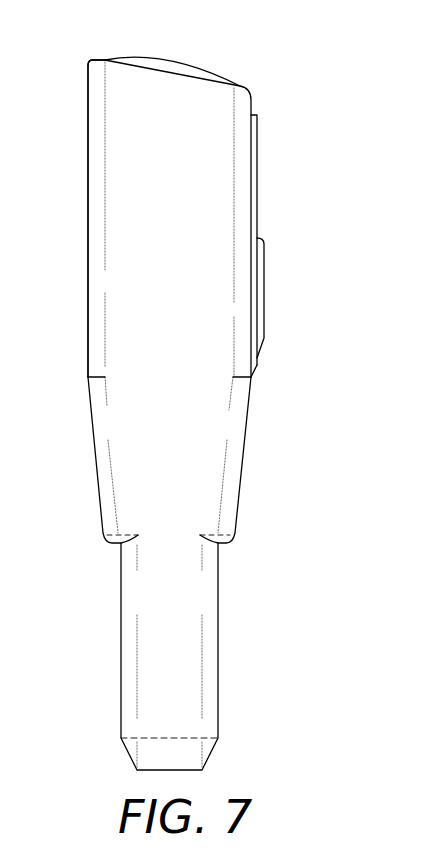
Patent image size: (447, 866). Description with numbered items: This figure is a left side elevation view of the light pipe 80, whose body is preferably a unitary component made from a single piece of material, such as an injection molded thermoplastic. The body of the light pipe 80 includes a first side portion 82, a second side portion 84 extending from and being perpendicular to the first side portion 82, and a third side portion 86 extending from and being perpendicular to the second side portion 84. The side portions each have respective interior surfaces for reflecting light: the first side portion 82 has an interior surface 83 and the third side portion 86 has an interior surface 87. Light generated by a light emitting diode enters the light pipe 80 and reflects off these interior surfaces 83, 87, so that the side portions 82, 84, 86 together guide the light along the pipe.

The light pipe 80 is at (313, 138).
The first side portion 82 is at (251, 380).
The interior surface 83 is at (252, 228).
The second side portion 84 is at (130, 398).
The third side portion 86 is at (88, 240).
The interior surface 87 is at (88, 135).